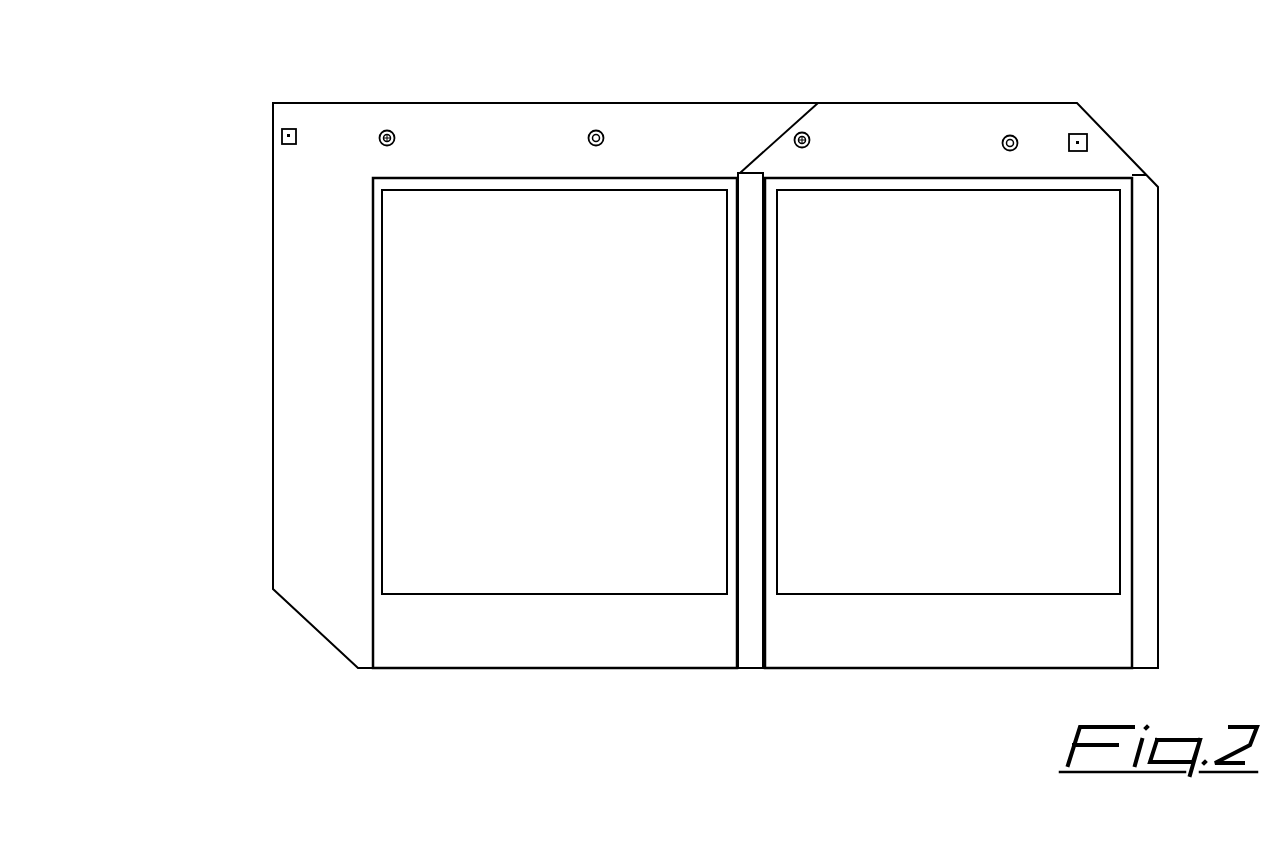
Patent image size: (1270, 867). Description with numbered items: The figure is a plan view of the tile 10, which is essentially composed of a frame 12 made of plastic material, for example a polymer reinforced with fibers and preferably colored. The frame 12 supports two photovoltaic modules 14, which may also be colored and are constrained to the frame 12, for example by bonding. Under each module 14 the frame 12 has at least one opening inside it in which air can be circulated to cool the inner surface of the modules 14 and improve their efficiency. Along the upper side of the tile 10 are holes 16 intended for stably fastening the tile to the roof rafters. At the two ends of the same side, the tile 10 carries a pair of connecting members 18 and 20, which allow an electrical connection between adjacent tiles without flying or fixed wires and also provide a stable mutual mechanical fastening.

The tile 10 is at (627, 82).
The frame 12 is at (300, 311).
The photovoltaic module 14 is at (593, 400).
The holes 16 is at (388, 130).
The connecting member 18 is at (1080, 142).
The connecting member 20 is at (290, 139).